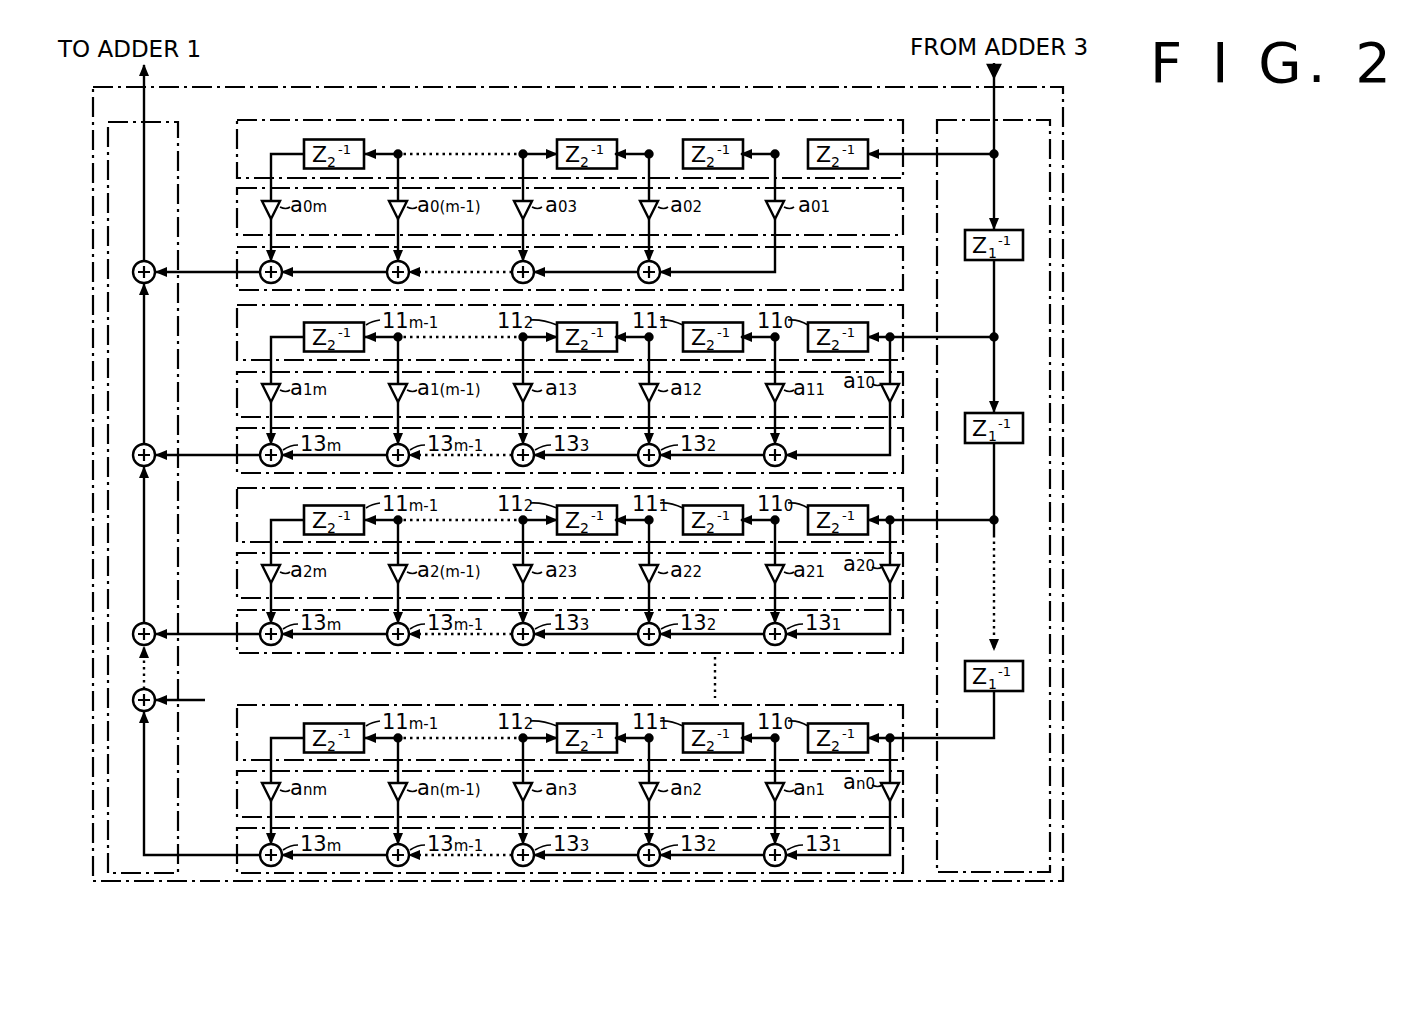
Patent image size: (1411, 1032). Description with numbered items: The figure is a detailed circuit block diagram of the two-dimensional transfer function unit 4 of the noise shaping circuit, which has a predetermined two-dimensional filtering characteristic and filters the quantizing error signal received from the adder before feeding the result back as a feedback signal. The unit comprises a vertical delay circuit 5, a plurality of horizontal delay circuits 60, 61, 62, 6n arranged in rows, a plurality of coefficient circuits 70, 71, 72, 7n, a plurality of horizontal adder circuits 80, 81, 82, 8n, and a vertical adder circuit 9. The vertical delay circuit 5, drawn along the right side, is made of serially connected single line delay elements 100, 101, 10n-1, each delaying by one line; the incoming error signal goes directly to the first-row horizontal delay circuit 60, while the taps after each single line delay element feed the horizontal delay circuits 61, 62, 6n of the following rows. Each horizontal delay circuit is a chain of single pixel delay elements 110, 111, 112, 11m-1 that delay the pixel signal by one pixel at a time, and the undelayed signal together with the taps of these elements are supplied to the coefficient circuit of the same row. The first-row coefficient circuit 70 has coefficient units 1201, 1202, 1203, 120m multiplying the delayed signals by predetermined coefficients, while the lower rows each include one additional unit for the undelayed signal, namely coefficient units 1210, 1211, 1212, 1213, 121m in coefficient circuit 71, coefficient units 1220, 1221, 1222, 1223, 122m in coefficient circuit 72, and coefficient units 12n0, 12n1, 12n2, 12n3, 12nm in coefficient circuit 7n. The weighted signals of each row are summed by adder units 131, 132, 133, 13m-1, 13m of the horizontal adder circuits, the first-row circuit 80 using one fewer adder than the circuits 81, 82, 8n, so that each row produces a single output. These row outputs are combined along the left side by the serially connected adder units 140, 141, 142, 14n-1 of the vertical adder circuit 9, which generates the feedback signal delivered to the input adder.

The two-dimensional transfer function unit 4 is at (312, 87).
The vertical delay circuit 5 is at (1050, 712).
The horizontal delay circuit 60 is at (325, 120).
The horizontal delay circuit 61 is at (903, 318).
The horizontal delay circuit 62 is at (903, 498).
The horizontal delay circuit 6n is at (265, 705).
The coefficient circuit 70 is at (903, 196).
The coefficient circuit 71 is at (903, 380).
The coefficient circuit 72 is at (903, 560).
The coefficient circuit 7n is at (903, 800).
The horizontal adder circuit 80 is at (903, 275).
The horizontal adder circuit 81 is at (903, 440).
The horizontal adder circuit 82 is at (903, 615).
The horizontal adder circuit 8n is at (585, 878).
The vertical adder circuit 9 is at (120, 882).
The single line delay element 100 is at (967, 238).
The single line delay element 101 is at (967, 421).
The single line delay element 10n-1 is at (1005, 692).
The single pixel delay element 11m-1 is at (366, 142).
The single pixel delay element 112 is at (557, 142).
The single pixel delay element 111 is at (683, 142).
The single pixel delay element 110 is at (808, 142).
The coefficient unit 120m is at (262, 212).
The coefficient unit 1203 is at (517, 213).
The coefficient unit 1202 is at (642, 212).
The coefficient unit 1201 is at (768, 212).
The coefficient unit 121m is at (262, 395).
The coefficient unit 1213 is at (517, 396).
The coefficient unit 1212 is at (642, 395).
The coefficient unit 1211 is at (768, 395).
The coefficient unit 1210 is at (882, 395).
The coefficient unit 122m is at (262, 577).
The coefficient unit 1223 is at (517, 578).
The coefficient unit 1222 is at (642, 577).
The coefficient unit 1221 is at (768, 577).
The coefficient unit 1220 is at (882, 577).
The coefficient unit 12nm is at (262, 795).
The coefficient unit 12n3 is at (517, 796).
The coefficient unit 12n2 is at (642, 795).
The coefficient unit 12n1 is at (768, 795).
The coefficient unit 12n0 is at (882, 795).
The adder unit 13m is at (283, 267).
The adder unit 13m-1 is at (410, 267).
The adder unit 133 is at (535, 267).
The adder unit 132 is at (661, 267).
The adder unit 131 is at (787, 450).
The adder unit 140 is at (156, 281).
The adder unit 141 is at (156, 464).
The adder unit 142 is at (156, 643).
The adder unit 14n-1 is at (158, 692).